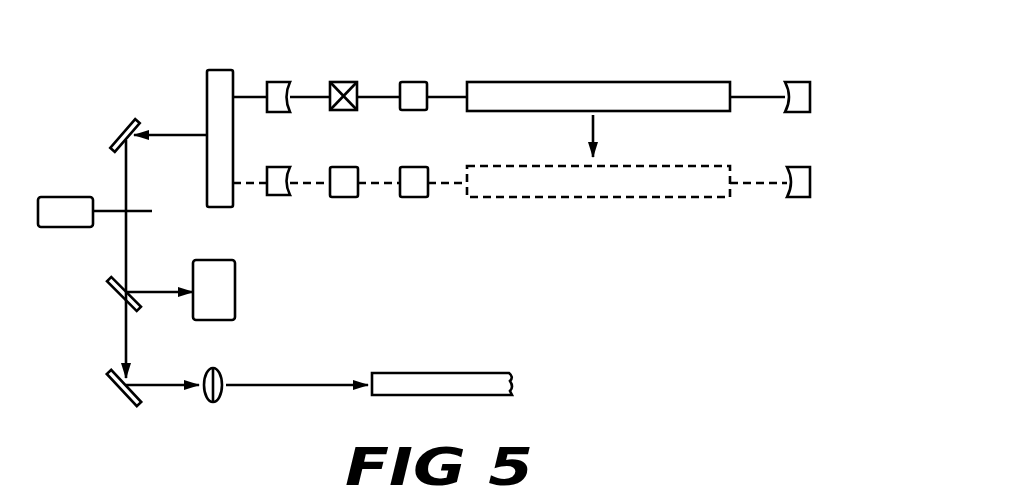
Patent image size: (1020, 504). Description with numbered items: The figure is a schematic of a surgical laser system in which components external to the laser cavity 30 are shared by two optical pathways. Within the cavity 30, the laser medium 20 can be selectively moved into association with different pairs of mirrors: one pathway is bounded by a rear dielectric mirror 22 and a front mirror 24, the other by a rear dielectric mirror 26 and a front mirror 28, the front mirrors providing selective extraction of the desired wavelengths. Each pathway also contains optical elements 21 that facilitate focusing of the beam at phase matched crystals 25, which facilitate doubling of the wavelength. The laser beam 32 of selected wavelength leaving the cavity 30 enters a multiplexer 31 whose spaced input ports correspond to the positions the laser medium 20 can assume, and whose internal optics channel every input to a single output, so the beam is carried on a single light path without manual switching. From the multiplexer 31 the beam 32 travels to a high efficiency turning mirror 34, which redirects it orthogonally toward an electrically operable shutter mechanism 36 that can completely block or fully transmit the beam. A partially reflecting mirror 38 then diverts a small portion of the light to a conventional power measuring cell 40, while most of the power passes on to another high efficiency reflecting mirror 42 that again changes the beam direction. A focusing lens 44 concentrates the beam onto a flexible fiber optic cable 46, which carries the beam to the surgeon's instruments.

The laser medium 20 is at (550, 82).
The optical elements 21 is at (408, 82).
The rear dielectric mirror 22 is at (793, 82).
The front mirror 24 is at (277, 82).
The phase matched crystals 25 is at (338, 82).
The rear dielectric mirror 26 is at (797, 197).
The front mirror 28 is at (278, 195).
The cavity 30 is at (617, 56).
The multiplexer 31 is at (217, 69).
The laser beam 32 is at (192, 133).
The high efficiency turning mirror 34 is at (132, 126).
The shutter mechanism 36 is at (93, 185).
The partially reflecting mirror 38 is at (110, 287).
The power measuring cell 40 is at (235, 287).
The high efficiency reflecting mirror 42 is at (115, 382).
The focusing lens 44 is at (218, 398).
The fiber optic cable 46 is at (432, 373).